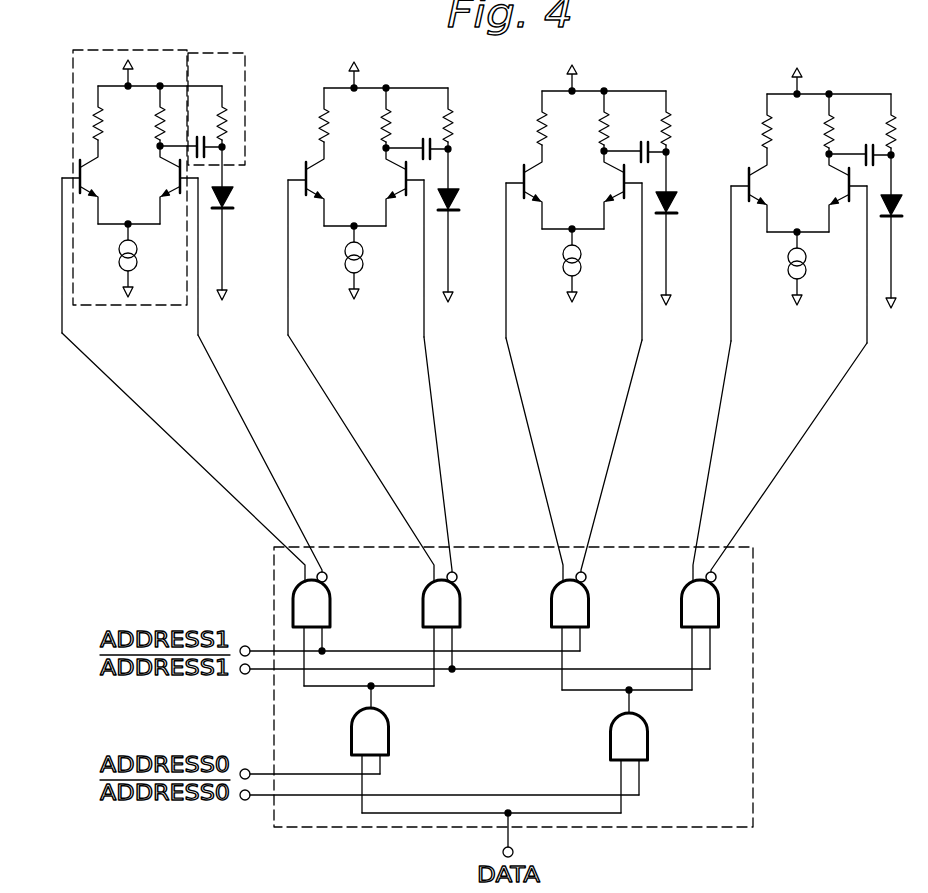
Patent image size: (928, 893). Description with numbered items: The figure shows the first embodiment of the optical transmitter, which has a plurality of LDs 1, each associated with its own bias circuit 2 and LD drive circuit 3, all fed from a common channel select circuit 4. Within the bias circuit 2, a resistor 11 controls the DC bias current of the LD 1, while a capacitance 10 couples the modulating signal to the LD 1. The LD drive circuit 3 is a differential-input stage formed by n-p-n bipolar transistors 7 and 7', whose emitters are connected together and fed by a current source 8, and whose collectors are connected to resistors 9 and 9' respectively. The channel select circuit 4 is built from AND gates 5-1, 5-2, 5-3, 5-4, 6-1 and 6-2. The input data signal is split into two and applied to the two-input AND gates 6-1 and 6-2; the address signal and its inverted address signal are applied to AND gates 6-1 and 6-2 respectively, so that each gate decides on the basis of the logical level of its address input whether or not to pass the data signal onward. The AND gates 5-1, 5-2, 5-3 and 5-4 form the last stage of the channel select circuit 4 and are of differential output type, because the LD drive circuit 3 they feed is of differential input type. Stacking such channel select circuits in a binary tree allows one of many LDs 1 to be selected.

The LD 1 is at (230, 201).
The bias circuit 2 is at (246, 74).
The LD drive circuit 3 is at (72, 70).
The channel select circuit 4 is at (753, 673).
The AND gate 5-1 is at (331, 607).
The AND gate 5-2 is at (461, 619).
The AND gate 5-3 is at (592, 596).
The AND gate 5-4 is at (682, 622).
The AND gate 6-1 is at (389, 732).
The AND gate 6-2 is at (649, 736).
The n-p-n bipolar transistor 7 is at (94, 179).
The n-p-n bipolar transistor 7' is at (165, 192).
The current source 8 is at (134, 259).
The resistor 9 is at (73, 126).
The resistor 9' is at (154, 126).
The capacitance 10 is at (203, 132).
The resistor 11 is at (228, 132).